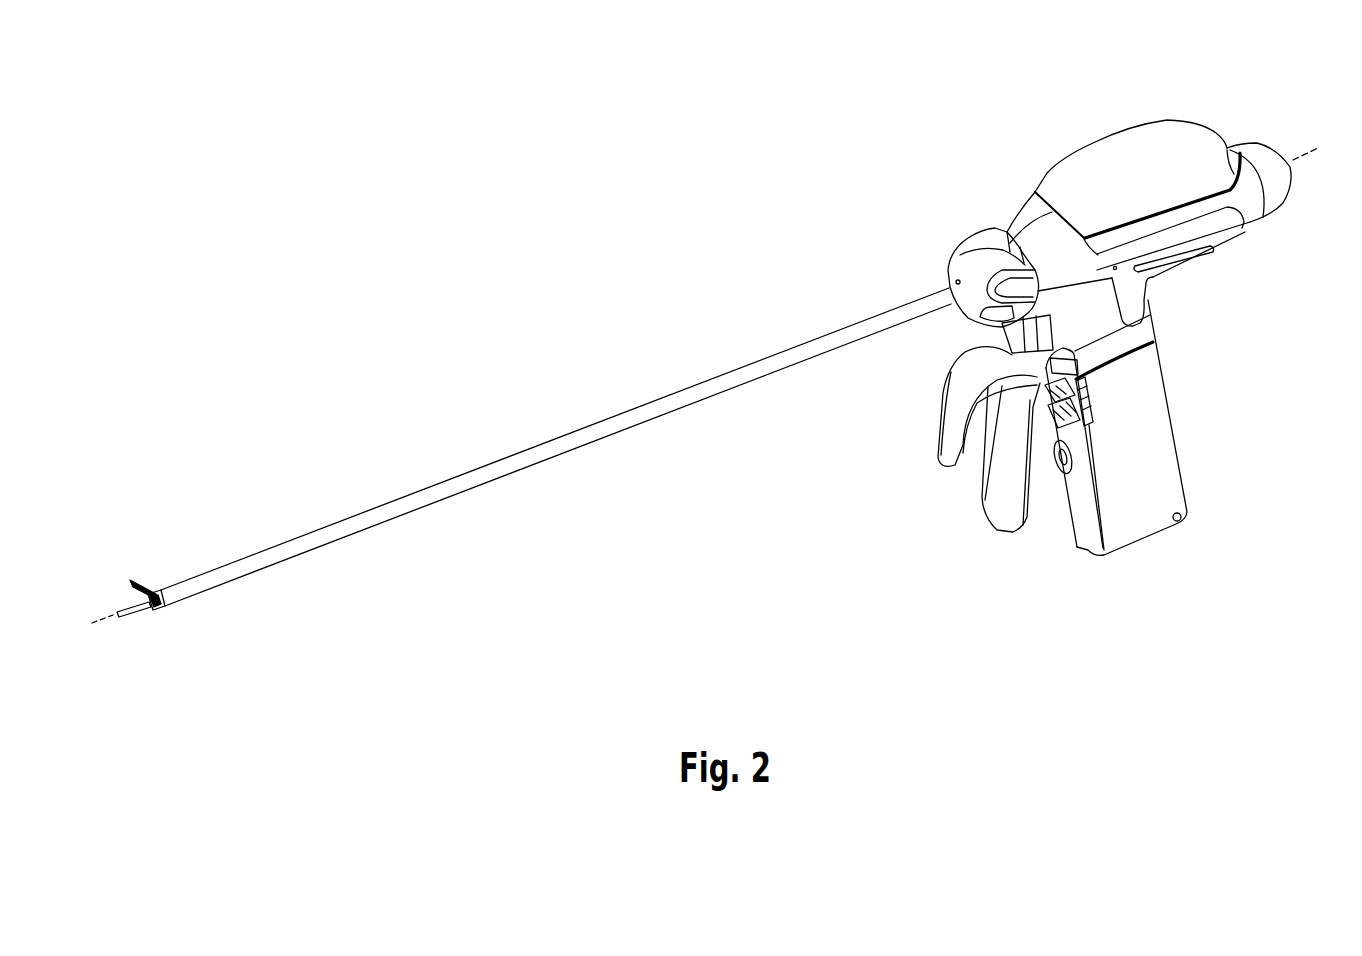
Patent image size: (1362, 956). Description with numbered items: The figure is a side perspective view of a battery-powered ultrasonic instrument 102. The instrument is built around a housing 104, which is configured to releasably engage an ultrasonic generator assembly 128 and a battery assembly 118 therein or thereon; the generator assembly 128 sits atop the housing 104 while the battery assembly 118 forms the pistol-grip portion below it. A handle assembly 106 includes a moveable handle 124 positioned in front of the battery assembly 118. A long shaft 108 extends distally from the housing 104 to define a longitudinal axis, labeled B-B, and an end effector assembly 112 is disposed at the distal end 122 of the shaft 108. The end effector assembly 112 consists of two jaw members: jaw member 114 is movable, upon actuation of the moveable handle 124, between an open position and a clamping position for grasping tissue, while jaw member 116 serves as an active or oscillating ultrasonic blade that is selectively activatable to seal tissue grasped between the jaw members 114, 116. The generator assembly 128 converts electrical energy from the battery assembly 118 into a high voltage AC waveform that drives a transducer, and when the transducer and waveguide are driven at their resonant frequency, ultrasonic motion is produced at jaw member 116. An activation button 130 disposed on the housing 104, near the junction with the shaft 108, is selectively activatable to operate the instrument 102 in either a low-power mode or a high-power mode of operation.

The ultrasonic instrument 102 is at (658, 314).
The housing 104 is at (1179, 102).
The handle assembly 106 is at (1162, 550).
The shaft 108 is at (445, 483).
The end effector assembly 112 is at (159, 563).
The jaw member 114 is at (143, 584).
The jaw member 116 is at (139, 617).
The battery assembly 118 is at (1163, 417).
The distal end 122 is at (187, 597).
The moveable handle 124 is at (1000, 478).
The generator assembly 128 is at (1108, 136).
The activation button 130 is at (1002, 333).